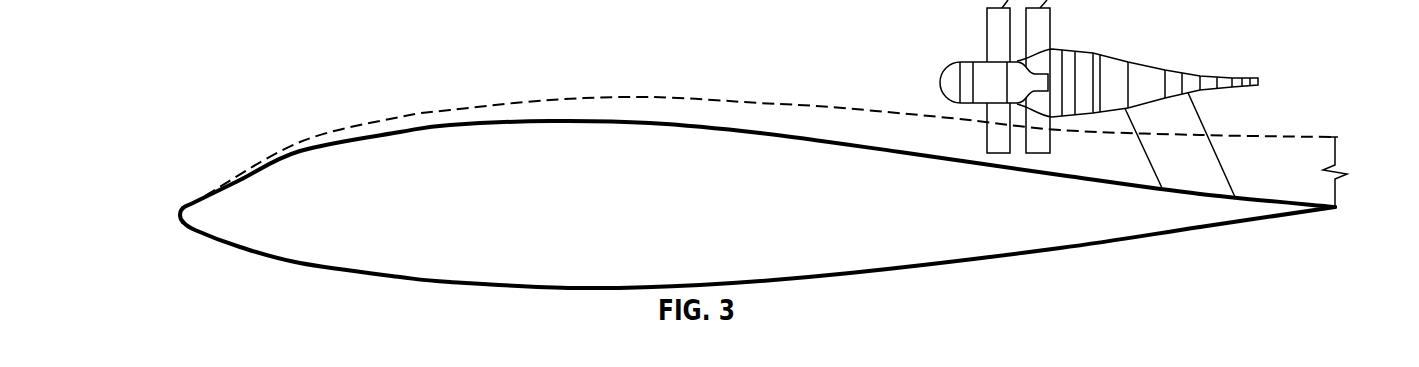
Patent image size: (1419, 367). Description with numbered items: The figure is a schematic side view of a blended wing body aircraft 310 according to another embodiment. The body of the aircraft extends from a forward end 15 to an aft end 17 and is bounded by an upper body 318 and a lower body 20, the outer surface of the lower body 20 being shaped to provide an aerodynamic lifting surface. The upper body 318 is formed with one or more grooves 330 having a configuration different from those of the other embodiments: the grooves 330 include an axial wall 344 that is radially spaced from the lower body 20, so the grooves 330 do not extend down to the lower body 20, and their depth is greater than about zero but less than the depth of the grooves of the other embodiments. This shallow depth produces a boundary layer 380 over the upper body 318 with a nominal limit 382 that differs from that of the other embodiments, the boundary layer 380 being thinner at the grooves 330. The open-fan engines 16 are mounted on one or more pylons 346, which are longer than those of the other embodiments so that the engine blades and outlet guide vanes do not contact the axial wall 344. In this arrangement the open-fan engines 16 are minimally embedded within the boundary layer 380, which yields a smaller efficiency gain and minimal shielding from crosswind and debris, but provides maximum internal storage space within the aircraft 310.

The blended wing body aircraft 310 is at (752, 180).
The upper body 318 is at (402, 133).
The forward end 15 is at (163, 210).
The lower body 20 is at (326, 270).
The nominal limit 382 is at (681, 97).
The boundary layer 380 is at (769, 112).
The grooves 330 is at (891, 140).
The open-fan engines 16 is at (1057, 48).
The axial wall 344 is at (1268, 197).
The pylons 346 is at (1152, 170).
The aft end 17 is at (1345, 224).